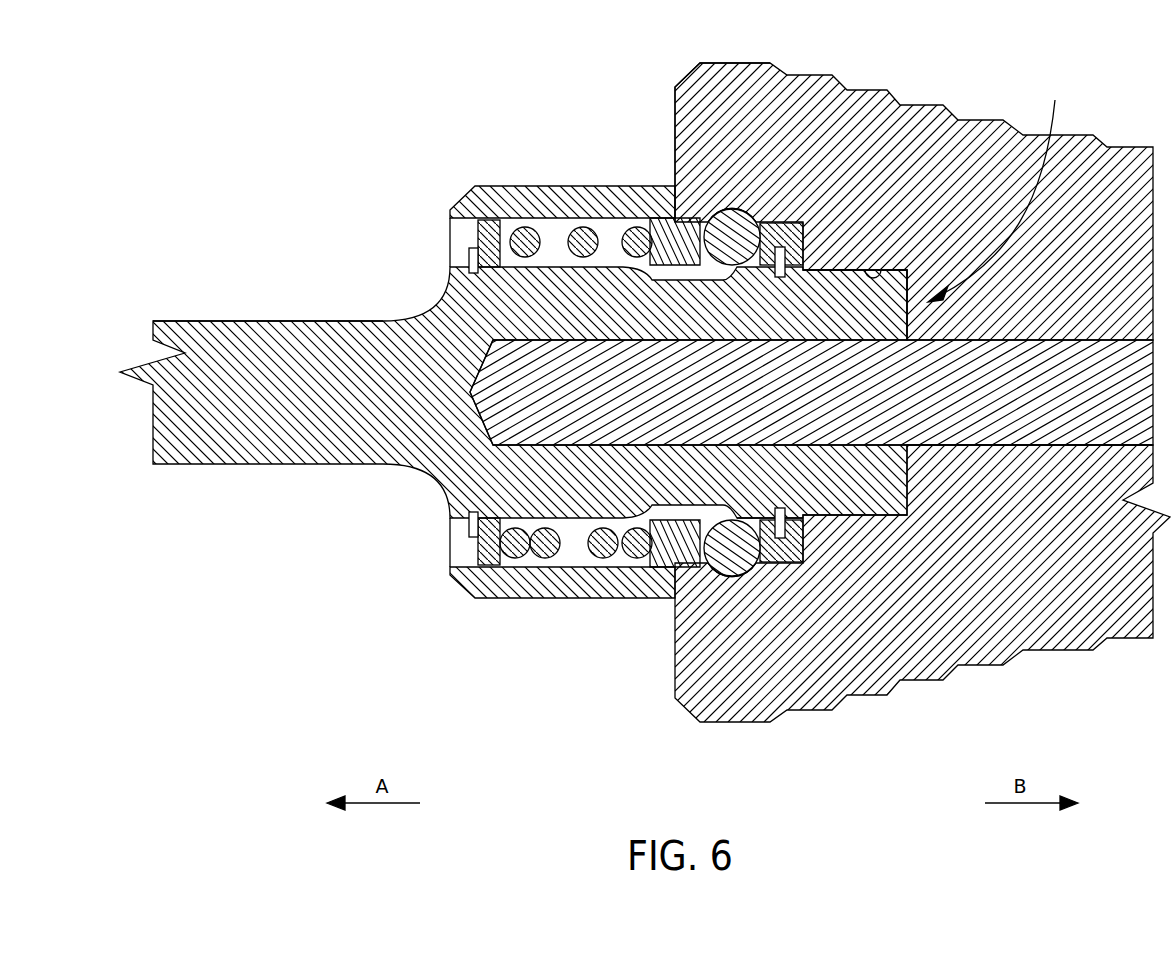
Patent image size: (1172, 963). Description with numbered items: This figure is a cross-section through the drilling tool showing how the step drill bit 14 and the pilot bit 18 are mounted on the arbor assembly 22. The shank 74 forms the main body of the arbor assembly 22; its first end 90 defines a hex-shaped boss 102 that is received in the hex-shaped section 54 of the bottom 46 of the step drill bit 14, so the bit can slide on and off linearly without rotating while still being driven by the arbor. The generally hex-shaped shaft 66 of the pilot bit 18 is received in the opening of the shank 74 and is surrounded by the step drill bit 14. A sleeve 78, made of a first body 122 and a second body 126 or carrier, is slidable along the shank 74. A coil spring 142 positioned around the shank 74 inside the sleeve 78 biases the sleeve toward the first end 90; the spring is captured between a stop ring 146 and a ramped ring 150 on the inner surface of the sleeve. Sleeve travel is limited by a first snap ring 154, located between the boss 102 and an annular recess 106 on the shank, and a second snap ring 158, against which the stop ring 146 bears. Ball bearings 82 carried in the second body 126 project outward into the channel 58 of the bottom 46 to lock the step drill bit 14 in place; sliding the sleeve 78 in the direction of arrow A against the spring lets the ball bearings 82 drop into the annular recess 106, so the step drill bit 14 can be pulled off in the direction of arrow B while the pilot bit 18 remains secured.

The step drill bit 14 is at (1117, 160).
The pilot bit 18 is at (957, 427).
The arbor assembly 22 is at (310, 447).
The bottom 46 is at (675, 678).
The hex-shaped section 54 is at (870, 272).
The channel 58 is at (737, 218).
The shaft 66 is at (1018, 428).
The shank 74 is at (296, 320).
The sleeve 78 is at (510, 186).
The ball bearings 82 is at (718, 226).
The first end 90 is at (999, 189).
The hex-shaped boss 102 is at (842, 500).
The annular recess 106 is at (680, 505).
The first body 122 is at (515, 598).
The second body 126 is at (697, 220).
The spring 142 is at (578, 238).
The stop ring 146 is at (487, 230).
The ramped ring 150 is at (655, 228).
The first snap ring 154 is at (805, 255).
The second snap ring 158 is at (470, 522).